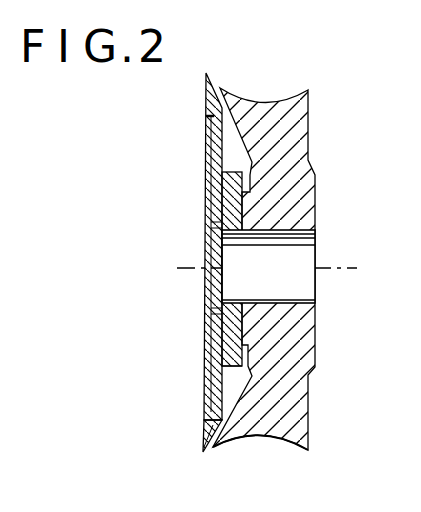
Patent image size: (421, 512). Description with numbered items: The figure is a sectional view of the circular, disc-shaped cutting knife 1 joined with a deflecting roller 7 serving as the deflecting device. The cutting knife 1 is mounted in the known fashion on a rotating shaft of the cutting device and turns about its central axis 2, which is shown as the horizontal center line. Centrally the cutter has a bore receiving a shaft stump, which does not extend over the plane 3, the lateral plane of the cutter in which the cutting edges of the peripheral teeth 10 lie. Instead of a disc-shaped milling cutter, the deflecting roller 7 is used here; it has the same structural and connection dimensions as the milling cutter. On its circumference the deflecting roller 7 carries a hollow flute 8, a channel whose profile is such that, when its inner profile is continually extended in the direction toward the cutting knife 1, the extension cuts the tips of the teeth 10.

The cutting knife 1 is at (189, 220).
The central axis 2 is at (327, 265).
The plane 3 is at (207, 87).
The deflecting roller 7 is at (300, 348).
The hollow flute 8 is at (273, 440).
The teeth 10 is at (204, 453).